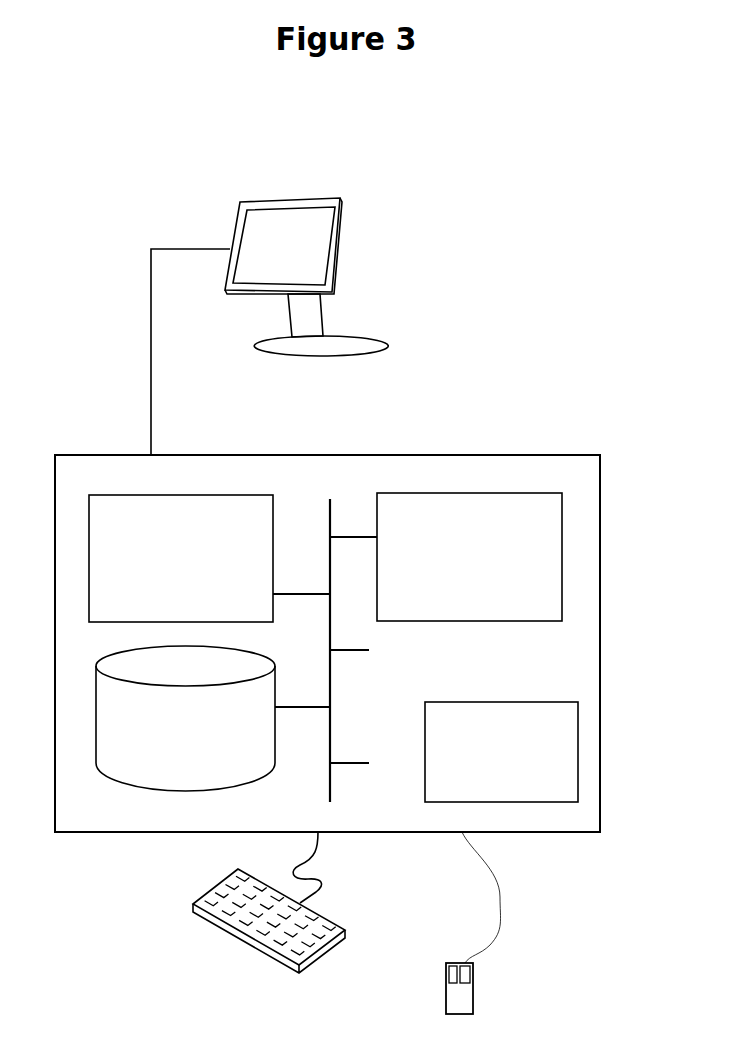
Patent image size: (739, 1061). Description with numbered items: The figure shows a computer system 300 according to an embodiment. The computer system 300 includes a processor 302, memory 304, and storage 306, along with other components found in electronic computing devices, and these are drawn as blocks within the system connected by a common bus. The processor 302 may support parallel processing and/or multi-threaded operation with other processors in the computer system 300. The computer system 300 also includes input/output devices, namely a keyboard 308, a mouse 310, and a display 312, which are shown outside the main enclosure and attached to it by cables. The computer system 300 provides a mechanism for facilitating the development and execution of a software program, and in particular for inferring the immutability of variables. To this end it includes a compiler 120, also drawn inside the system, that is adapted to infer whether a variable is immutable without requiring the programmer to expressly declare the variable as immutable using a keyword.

The computer system 300 is at (600, 666).
The processor 302 is at (469, 557).
The memory 304 is at (181, 558).
The storage 306 is at (185, 718).
The keyboard 308 is at (345, 934).
The mouse 310 is at (473, 1000).
The display 312 is at (340, 247).
The compiler 120 is at (501, 752).